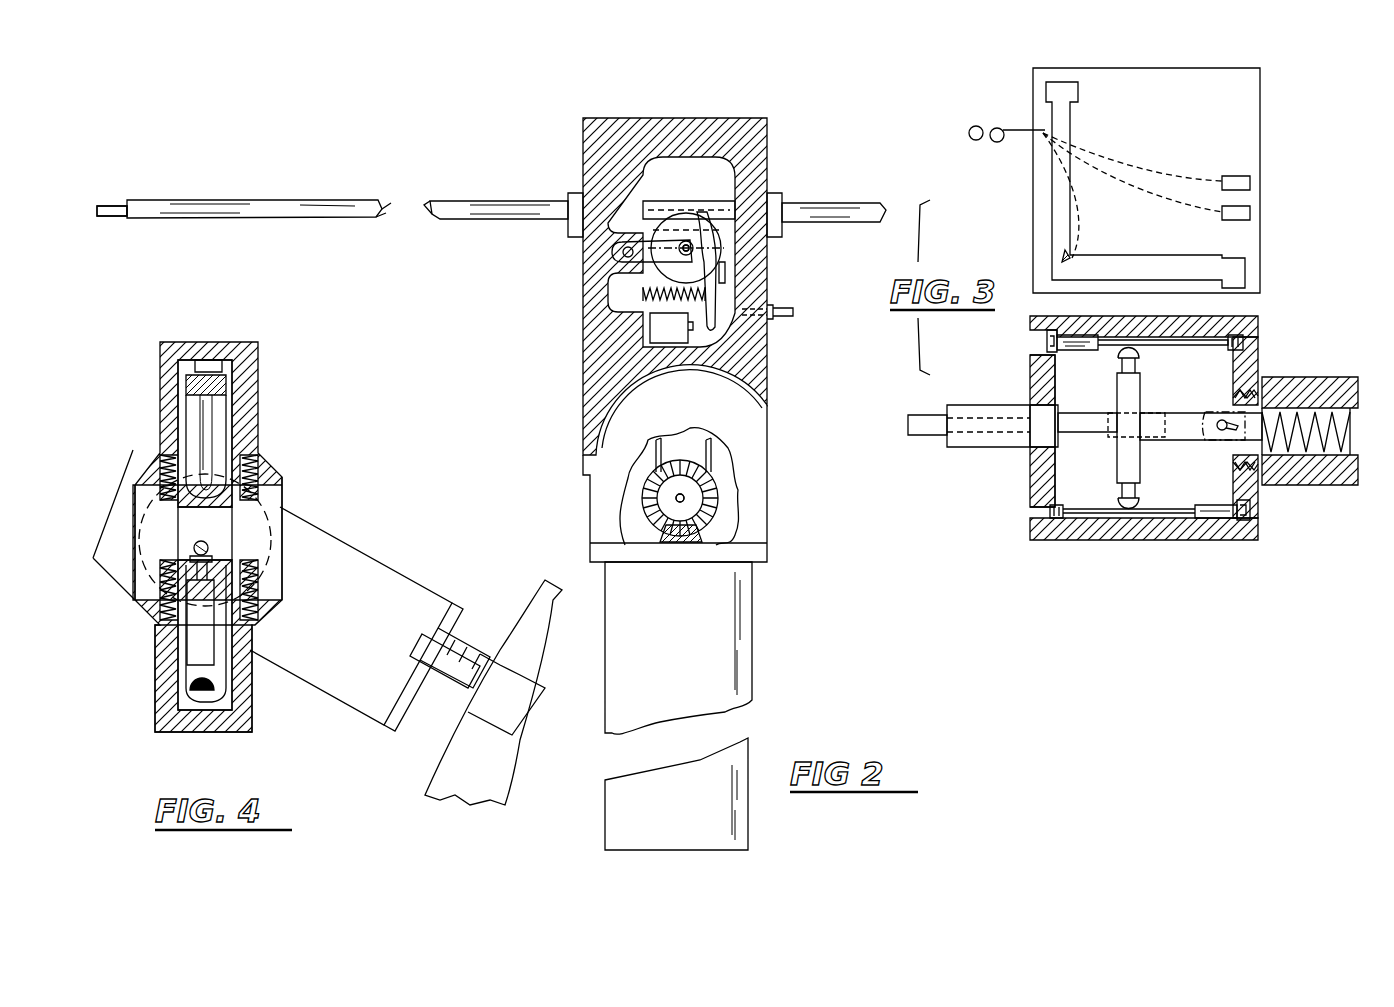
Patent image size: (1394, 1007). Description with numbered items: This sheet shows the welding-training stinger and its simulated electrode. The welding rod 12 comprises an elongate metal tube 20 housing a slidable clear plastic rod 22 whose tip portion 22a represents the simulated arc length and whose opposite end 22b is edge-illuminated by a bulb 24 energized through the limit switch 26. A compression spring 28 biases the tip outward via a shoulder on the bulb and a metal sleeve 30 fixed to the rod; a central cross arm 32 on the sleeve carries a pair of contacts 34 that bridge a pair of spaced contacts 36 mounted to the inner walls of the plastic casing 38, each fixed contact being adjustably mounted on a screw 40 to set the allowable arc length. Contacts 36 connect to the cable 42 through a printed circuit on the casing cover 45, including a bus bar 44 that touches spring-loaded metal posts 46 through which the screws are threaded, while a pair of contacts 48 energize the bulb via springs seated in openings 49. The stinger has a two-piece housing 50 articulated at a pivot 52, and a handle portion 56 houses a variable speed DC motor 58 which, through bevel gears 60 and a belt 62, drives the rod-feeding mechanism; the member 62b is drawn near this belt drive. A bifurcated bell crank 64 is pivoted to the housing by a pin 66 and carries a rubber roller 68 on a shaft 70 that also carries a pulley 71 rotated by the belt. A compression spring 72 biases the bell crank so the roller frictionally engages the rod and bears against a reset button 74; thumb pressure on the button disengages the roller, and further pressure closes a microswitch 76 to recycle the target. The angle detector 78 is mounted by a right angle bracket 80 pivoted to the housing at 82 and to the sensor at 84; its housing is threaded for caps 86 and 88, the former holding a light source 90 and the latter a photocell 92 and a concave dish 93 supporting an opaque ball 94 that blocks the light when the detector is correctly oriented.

In FIG. 2, the welding rod 12 is at (340, 185).
In FIG. 2, the elongate metal tube 20 is at (253, 200).
In FIG. 3, the elongate metal tube 20 is at (948, 447).
In FIG. 2, the inner clear plastic rod 22 is at (436, 200).
In FIG. 3, the inner clear plastic rod 22 is at (910, 410).
In FIG. 2, the tip portion 22a is at (113, 205).
In FIG. 3, the opposite end of the rod 22b is at (1090, 422).
In FIG. 3, the bulb 24 is at (1222, 420).
In FIG. 3, the limit switch 26 is at (1124, 545).
In FIG. 3, the compression spring 28 is at (1352, 440).
In FIG. 3, the metal sleeve 30 is at (1172, 413).
In FIG. 3, the central cross arm 32 is at (1122, 466).
In FIG. 3, the contacts 34 is at (1135, 362).
In FIG. 3, the spaced contacts 36 is at (1075, 335).
In FIG. 3, the plastic casing 38 is at (1030, 485).
In FIG. 3, the screw 40 is at (1047, 344).
In FIG. 3, the cable 42 is at (962, 118).
In FIG. 3, the bus bar 44 is at (1065, 122).
In FIG. 3, the casing cover 45 is at (1143, 68).
In FIG. 3, the spring loaded metal posts 46 is at (1243, 336).
In FIG. 3, the contacts 48 is at (1250, 213).
In FIG. 3, the openings 49 is at (1258, 400).
In FIG. 2, the two-piece housing 50 is at (733, 118).
In FIG. 2, the pivot 52 is at (680, 498).
In FIG. 2, the handle portion 56 is at (752, 624).
In FIG. 2, the variable speed DC motor 58 is at (676, 606).
In FIG. 2, the bevel gears 60 is at (740, 510).
In FIG. 2, the belt 62 is at (726, 273).
In FIG. 2, the member 62b is at (712, 450).
In FIG. 2, the bifurcated bell crank 64 is at (706, 258).
In FIG. 2, the pin 66 is at (612, 252).
In FIG. 2, the rubber roller 68 is at (686, 213).
In FIG. 2, the shaft 70 is at (690, 230).
In FIG. 2, the pulley 71 is at (660, 240).
In FIG. 2, the compression spring 72 is at (643, 294).
In FIG. 2, the reset button 74 is at (788, 316).
In FIG. 2, the microswitch 76 is at (686, 340).
In FIG. 4, the welding rod angle detector 78 is at (305, 358).
In FIG. 4, the right angle bracket 80 is at (362, 614).
In FIG. 4, the pivotal mounting 82 is at (420, 650).
In FIG. 4, the pivotal mounting 84 is at (138, 460).
In FIG. 4, the cap 86 is at (255, 430).
In FIG. 4, the cap 88 is at (252, 706).
In FIG. 4, the light source 90 is at (198, 430).
In FIG. 4, the photocell 92 is at (185, 636).
In FIG. 4, the concave dish 93 is at (194, 547).
In FIG. 4, the opaque ball 94 is at (208, 548).